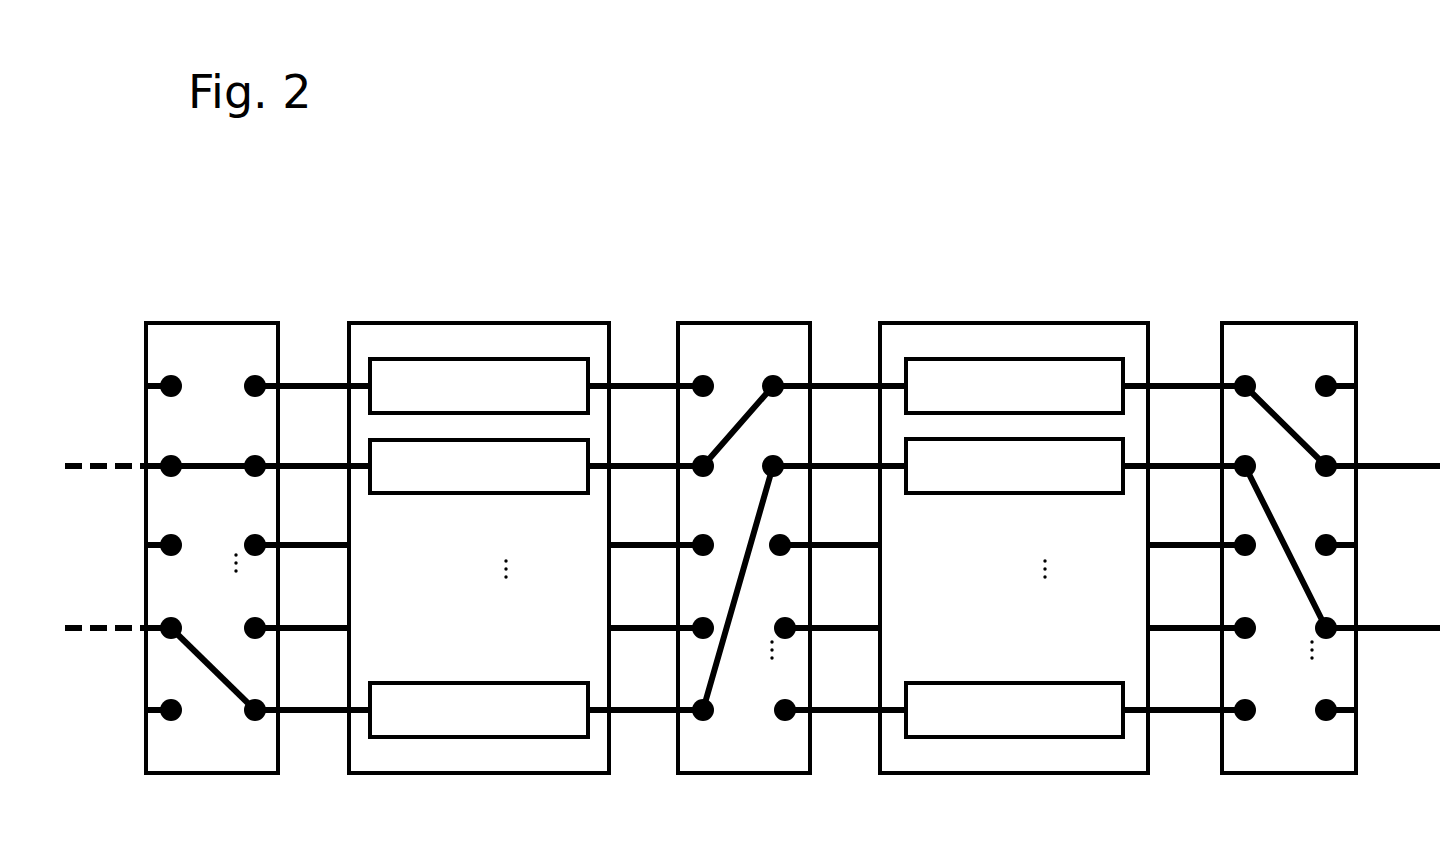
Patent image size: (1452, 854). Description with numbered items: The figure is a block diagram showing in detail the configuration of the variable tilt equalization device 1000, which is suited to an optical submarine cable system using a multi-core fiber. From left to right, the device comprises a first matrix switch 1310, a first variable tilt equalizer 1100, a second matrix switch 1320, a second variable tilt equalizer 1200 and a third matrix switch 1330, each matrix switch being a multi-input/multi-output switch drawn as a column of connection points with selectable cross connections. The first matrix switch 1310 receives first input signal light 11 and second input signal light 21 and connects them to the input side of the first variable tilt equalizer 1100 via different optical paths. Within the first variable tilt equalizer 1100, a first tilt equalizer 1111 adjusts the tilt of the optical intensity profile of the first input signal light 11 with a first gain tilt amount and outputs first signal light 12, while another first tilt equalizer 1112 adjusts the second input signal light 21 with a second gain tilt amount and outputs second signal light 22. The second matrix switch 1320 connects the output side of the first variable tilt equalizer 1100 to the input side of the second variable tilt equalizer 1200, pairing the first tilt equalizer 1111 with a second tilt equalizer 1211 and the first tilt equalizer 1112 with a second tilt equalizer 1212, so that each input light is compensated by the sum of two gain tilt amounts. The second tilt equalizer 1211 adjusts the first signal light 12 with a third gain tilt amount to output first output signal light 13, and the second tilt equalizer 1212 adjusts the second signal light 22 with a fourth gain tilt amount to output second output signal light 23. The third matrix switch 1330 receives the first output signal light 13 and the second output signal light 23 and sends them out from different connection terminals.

The variable tilt equalization device 1000 is at (837, 200).
The first matrix switch 1310 is at (212, 322).
The first variable tilt equalizer 1100 is at (405, 322).
The first tilt equalizer 1111 is at (418, 495).
The first tilt equalizer 1112 is at (530, 680).
The second matrix switch 1320 is at (737, 322).
The second variable tilt equalizer 1200 is at (1079, 322).
The second tilt equalizer 1211 is at (970, 358).
The second tilt equalizer 1212 is at (946, 495).
The third matrix switch 1330 is at (1300, 322).
The first input signal light 11 is at (99, 463).
The second input signal light 21 is at (97, 627).
The first signal light 12 is at (620, 464).
The second signal light 22 is at (817, 464).
The first output signal light 13 is at (1182, 382).
The second output signal light 23 is at (1155, 464).